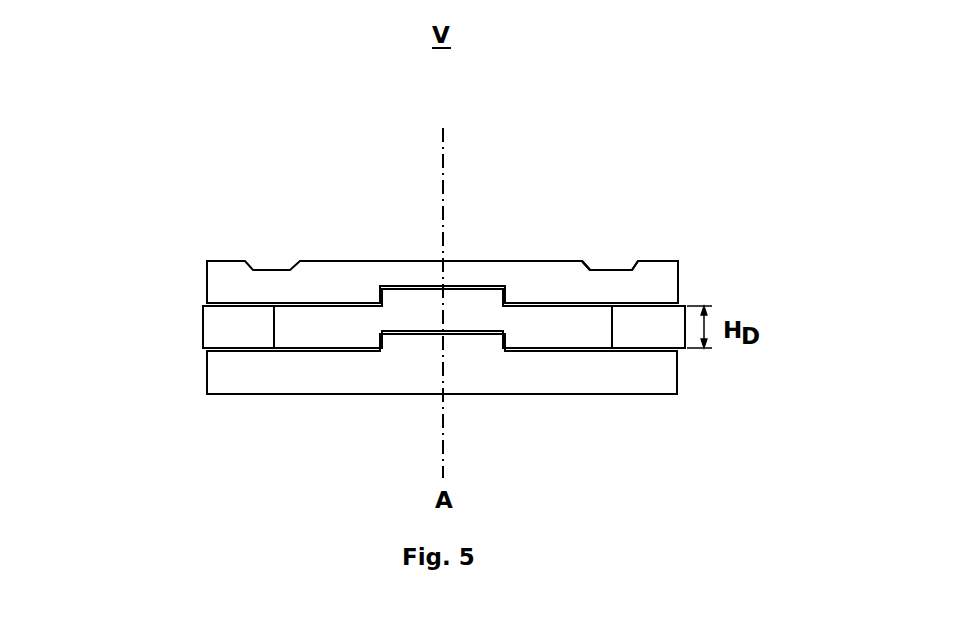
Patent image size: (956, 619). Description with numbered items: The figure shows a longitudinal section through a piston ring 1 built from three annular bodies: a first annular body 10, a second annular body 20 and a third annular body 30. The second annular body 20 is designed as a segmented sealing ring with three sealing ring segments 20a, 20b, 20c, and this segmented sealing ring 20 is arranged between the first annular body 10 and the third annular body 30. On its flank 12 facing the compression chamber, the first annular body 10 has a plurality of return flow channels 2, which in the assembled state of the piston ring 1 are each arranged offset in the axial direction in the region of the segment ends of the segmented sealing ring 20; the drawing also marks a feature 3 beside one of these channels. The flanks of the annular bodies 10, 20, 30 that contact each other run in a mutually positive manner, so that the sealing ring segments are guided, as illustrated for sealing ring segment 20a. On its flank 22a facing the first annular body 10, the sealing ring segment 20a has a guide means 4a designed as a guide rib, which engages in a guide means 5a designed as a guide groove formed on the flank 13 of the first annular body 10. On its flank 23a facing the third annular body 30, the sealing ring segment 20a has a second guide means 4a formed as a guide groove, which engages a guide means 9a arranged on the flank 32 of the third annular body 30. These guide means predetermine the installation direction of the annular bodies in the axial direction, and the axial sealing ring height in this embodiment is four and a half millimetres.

The piston ring 1 is at (410, 108).
The return flow channels 2 is at (607, 270).
The recess side wall 3 is at (585, 262).
The guide means 4a is at (432, 295).
The guide means 5a is at (470, 288).
The guide means 9a is at (480, 343).
The first annular body 10 is at (197, 273).
The flank 12 is at (321, 261).
The flank 13 is at (338, 303).
The second annular body 20 is at (198, 327).
The sealing ring segment 20a is at (590, 328).
The sealing ring segment 20b is at (663, 337).
The sealing ring segment 20c is at (241, 322).
The flank 22a is at (295, 303).
The flank 23a is at (302, 350).
The third annular body 30 is at (196, 372).
The flank 32 is at (320, 350).